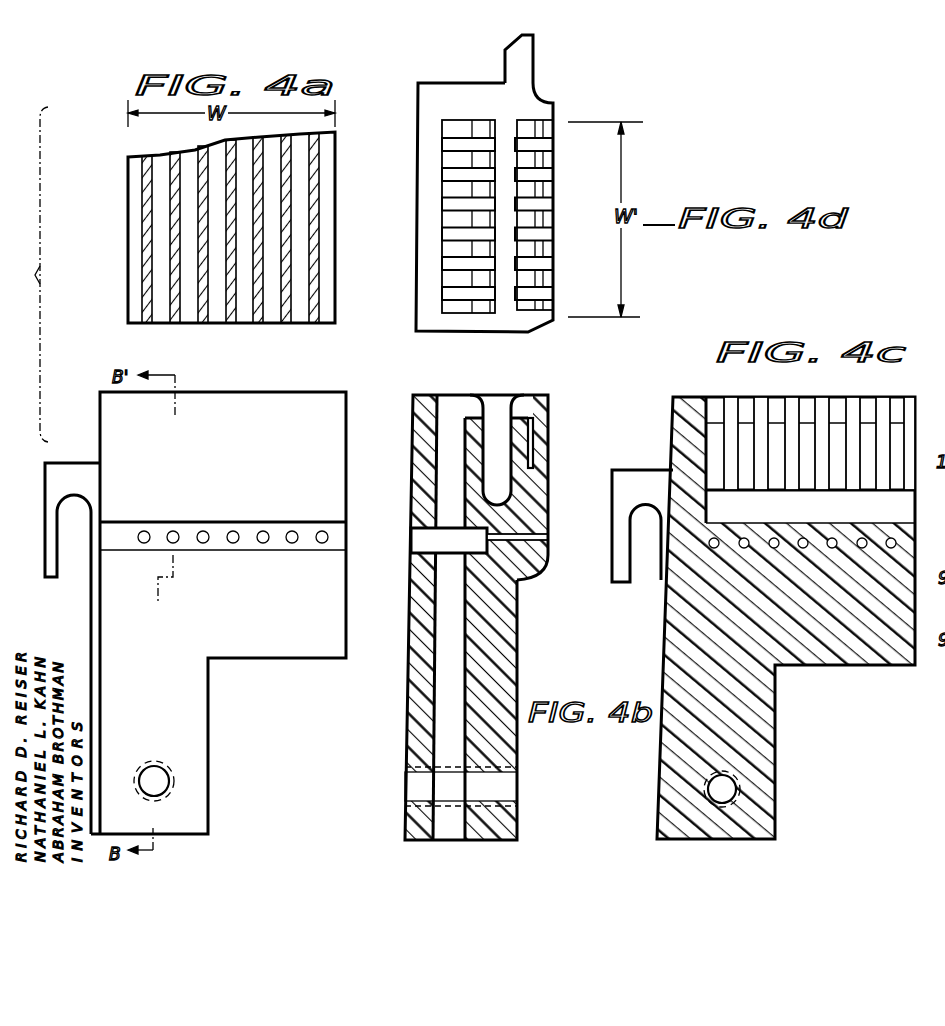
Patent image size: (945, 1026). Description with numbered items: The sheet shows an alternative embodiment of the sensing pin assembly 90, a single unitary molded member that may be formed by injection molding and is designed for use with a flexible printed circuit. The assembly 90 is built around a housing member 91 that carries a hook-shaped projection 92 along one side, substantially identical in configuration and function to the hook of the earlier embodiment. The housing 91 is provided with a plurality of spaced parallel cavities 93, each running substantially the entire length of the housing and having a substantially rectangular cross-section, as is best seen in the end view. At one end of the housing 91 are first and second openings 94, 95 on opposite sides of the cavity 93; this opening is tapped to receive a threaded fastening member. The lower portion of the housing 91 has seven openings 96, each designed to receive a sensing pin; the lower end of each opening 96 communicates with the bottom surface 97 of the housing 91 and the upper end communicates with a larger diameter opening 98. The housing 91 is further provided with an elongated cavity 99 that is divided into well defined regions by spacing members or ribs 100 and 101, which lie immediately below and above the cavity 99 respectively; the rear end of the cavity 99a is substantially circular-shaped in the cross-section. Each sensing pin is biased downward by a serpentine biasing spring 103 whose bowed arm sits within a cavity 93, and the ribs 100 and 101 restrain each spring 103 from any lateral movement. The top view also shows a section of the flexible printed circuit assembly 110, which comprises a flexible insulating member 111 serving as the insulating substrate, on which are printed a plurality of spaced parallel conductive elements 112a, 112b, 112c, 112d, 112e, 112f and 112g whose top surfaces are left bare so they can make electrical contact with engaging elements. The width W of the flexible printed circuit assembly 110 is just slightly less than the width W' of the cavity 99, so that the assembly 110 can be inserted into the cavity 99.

In FIG. 4c, the sensing pin assembly 90 is at (834, 670).
In FIG. 4b, the housing member 91 is at (229, 672).
In FIG. 4c, the housing member 91 is at (784, 720).
In FIG. 4d, the hook-shaped projection 92 is at (535, 63).
In FIG. 4b, the hook-shaped projection 92 is at (55, 487).
In FIG. 4c, the hook-shaped projection 92 is at (645, 470).
In FIG. 4d, the cavities 93 is at (463, 192).
In FIG. 4b, the cavities 93 is at (450, 628).
In FIG. 4b, the first opening 94 is at (412, 770).
In FIG. 4b, the second opening 95 is at (510, 800).
In FIG. 4b, the openings 96 is at (548, 537).
In FIG. 4c, the openings 96 is at (836, 537).
In FIG. 4b, the bottom surface 97 is at (548, 560).
In FIG. 4b, the larger diameter opening 98 is at (420, 547).
In FIG. 4d, the elongated cavity 99 is at (489, 240).
In FIG. 4b, the elongated cavity 99 is at (532, 438).
In FIG. 4b, the rear end of the cavity 99a is at (511, 504).
In FIG. 4d, the spacing members or ribs 100 is at (553, 233).
In FIG. 4b, the spacing members or ribs 100 is at (540, 396).
In FIG. 4c, the spacing members or ribs 100 is at (880, 396).
In FIG. 4d, the spacing members or ribs 101 is at (467, 143).
In FIG. 4b, the spacing members or ribs 101 is at (452, 394).
In FIG. 4c, the biasing spring 103 is at (935, 525).
In FIG. 4a, the flexible printed circuit assembly 110 is at (222, 248).
In FIG. 4a, the flexible insulating member 111 is at (128, 263).
In FIG. 4a, the conductive element 112a is at (146, 292).
In FIG. 4a, the conductive element 112b is at (160, 322).
In FIG. 4a, the conductive element 112c is at (197, 325).
In FIG. 4a, the conductive element 112d is at (232, 322).
In FIG. 4a, the conductive element 112e is at (262, 322).
In FIG. 4a, the conductive element 112f is at (290, 292).
In FIG. 4a, the conductive element 112g is at (318, 305).